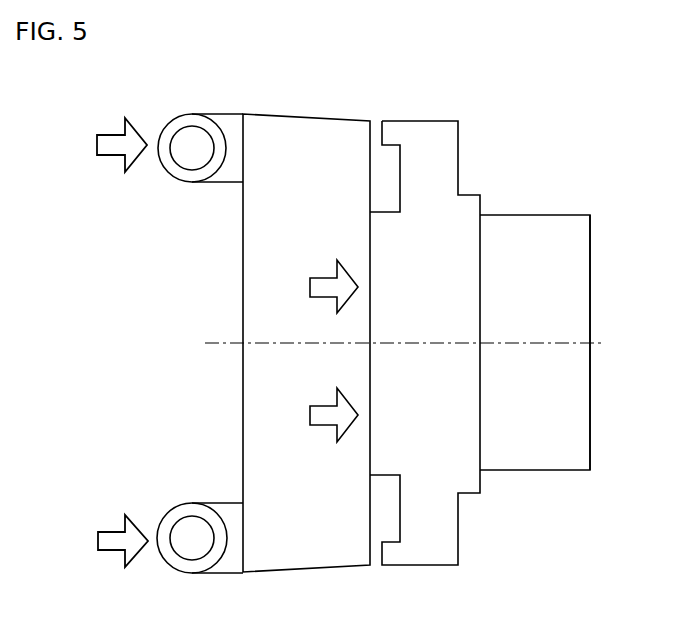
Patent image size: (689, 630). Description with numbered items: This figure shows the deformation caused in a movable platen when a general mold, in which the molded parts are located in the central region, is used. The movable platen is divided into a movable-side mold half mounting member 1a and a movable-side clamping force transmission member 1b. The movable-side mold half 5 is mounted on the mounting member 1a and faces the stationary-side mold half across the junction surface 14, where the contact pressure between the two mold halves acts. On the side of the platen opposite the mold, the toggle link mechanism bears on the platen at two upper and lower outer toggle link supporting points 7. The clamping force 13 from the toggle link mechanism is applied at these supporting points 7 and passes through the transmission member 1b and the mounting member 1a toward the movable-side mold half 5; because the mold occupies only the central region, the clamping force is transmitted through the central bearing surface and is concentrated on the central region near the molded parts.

The movable-side mold half mounting member 1a is at (428, 120).
The movable-side clamping force transmission member 1b is at (272, 318).
The movable-side mold half 5 is at (527, 215).
The toggle link supporting point 7 is at (176, 168).
The clamping force 13 is at (97, 155).
The junction surface 14 is at (590, 295).